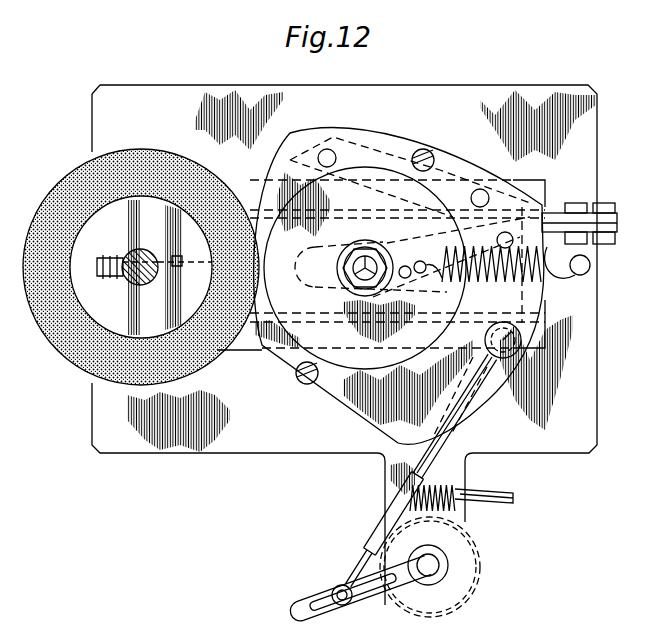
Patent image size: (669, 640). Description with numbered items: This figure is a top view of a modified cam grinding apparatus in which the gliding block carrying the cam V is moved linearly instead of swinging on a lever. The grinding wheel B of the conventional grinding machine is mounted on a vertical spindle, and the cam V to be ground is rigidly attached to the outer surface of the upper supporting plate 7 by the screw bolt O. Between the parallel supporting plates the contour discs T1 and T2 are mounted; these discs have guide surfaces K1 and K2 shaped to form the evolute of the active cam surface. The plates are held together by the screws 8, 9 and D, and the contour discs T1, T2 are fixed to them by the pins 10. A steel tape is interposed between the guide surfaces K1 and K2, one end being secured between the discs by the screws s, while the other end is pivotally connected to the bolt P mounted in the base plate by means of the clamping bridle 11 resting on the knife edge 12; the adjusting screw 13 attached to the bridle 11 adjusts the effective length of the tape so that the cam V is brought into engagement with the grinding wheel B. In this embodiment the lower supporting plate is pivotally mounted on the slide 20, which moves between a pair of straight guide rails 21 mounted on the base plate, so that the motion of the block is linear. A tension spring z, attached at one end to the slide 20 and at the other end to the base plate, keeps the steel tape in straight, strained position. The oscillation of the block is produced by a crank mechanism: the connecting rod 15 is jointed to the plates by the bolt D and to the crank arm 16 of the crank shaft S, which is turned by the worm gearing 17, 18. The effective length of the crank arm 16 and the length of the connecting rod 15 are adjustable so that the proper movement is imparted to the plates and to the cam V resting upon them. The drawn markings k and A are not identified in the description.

The grinding wheel B is at (63, 207).
The bolt P is at (146, 251).
The knife edge 12 is at (132, 257).
The adjusting screw 13 is at (110, 281).
The clamping bridle 11 is at (168, 281).
The straight guide rails 21 is at (243, 351).
The cam V is at (277, 152).
The screw bolt D is at (524, 355).
The screw bolt O is at (358, 259).
The guide surface K1 is at (395, 262).
The guide surface K2 is at (262, 178).
The link k is at (293, 254).
The upper supporting plate 7 is at (393, 145).
The screw 9 is at (427, 152).
The screw 8 is at (305, 383).
The pins 10 is at (483, 192).
The slide 20 is at (518, 324).
The contour disc T2 is at (548, 206).
The screws s is at (598, 204).
The contour disc T1 is at (594, 226).
The tension spring z is at (551, 273).
The connecting rod 15 is at (449, 442).
The pin A is at (336, 589).
The crank arm 16 is at (300, 613).
The crank shaft S is at (431, 568).
The worm gearing 17 is at (481, 557).
The worm gearing 18 is at (497, 495).